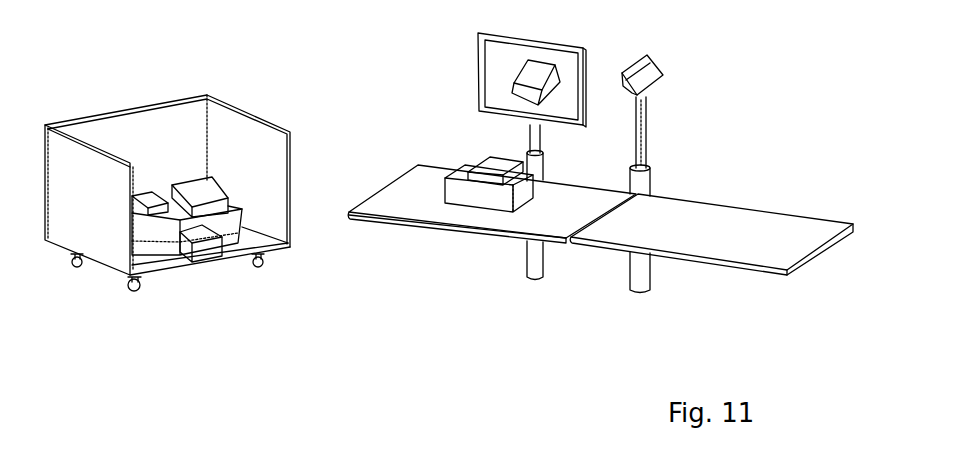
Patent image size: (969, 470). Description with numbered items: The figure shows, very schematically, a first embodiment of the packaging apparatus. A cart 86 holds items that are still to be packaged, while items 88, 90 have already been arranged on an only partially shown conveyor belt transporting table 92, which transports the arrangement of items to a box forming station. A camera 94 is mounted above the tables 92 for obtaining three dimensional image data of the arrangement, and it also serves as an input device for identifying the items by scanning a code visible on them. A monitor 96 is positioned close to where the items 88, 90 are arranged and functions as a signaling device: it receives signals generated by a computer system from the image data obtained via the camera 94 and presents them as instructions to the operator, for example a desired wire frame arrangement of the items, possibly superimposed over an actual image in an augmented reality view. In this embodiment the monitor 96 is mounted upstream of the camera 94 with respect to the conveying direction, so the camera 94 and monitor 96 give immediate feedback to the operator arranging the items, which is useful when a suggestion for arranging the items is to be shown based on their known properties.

The cart 86 is at (100, 240).
The item 88 is at (468, 188).
The item 90 is at (492, 167).
The conveyor belt transporting table 92 is at (405, 198).
The camera 94 is at (652, 80).
The monitor 96 is at (478, 65).